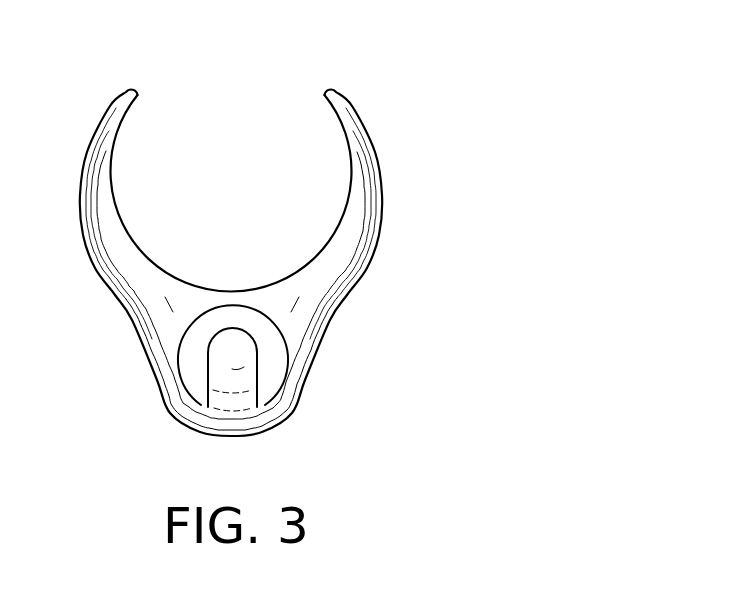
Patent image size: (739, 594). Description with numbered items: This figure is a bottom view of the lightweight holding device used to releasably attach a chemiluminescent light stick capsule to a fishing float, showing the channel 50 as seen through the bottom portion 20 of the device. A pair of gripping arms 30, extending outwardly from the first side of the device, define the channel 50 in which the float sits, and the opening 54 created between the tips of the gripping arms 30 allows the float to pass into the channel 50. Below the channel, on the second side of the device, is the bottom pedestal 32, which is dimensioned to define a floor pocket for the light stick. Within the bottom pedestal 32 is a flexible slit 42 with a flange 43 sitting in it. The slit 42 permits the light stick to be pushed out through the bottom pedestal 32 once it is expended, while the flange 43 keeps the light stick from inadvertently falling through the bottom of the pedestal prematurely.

The bottom portion 20 is at (403, 300).
The gripping arms 30 is at (118, 117).
The bottom pedestal 32 is at (113, 287).
The flexible slit 42 is at (182, 367).
The flange 43 is at (237, 353).
The channel 50 is at (224, 196).
The opening 54 is at (324, 93).